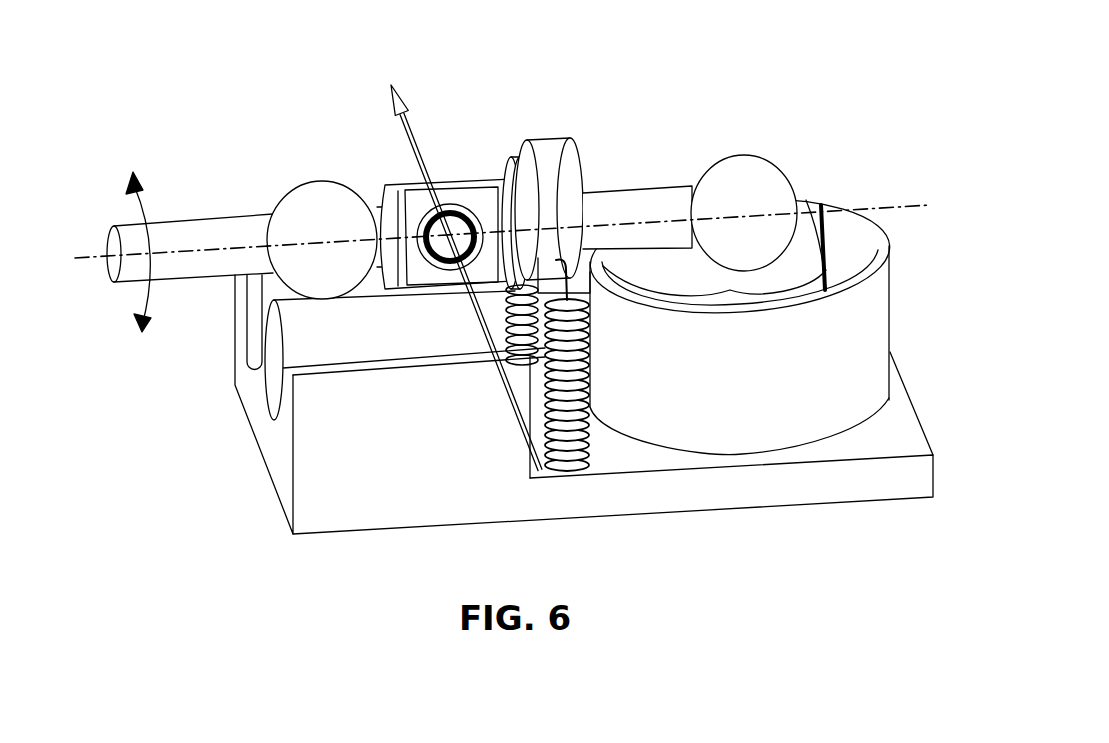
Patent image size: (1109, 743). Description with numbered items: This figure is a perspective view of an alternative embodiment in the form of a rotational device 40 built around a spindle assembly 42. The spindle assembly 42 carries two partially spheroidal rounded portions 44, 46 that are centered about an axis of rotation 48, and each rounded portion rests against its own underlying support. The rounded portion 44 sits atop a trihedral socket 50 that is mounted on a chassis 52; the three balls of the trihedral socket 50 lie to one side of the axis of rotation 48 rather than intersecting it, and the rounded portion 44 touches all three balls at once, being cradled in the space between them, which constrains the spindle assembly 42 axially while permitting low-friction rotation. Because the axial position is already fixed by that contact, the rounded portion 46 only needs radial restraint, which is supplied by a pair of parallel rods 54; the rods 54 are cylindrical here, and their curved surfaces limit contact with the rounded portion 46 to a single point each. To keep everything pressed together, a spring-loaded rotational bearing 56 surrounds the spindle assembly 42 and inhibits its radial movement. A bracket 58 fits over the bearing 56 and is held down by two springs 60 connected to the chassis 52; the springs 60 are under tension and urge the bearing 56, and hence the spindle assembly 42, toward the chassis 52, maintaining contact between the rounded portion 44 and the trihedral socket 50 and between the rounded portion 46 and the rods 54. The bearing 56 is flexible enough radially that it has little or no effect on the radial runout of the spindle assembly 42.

The rotational device 40 is at (531, 318).
The spindle assembly 42 is at (180, 233).
The rounded portion 44 is at (715, 175).
The rounded portion 46 is at (327, 195).
The axis of rotation 48 is at (925, 203).
The trihedral socket 50 is at (822, 413).
The chassis 52 is at (613, 498).
The parallel rods 54 is at (252, 325).
The spring-loaded rotational bearing 56 is at (512, 162).
The bracket 58 is at (560, 157).
The springs 60 is at (513, 352).